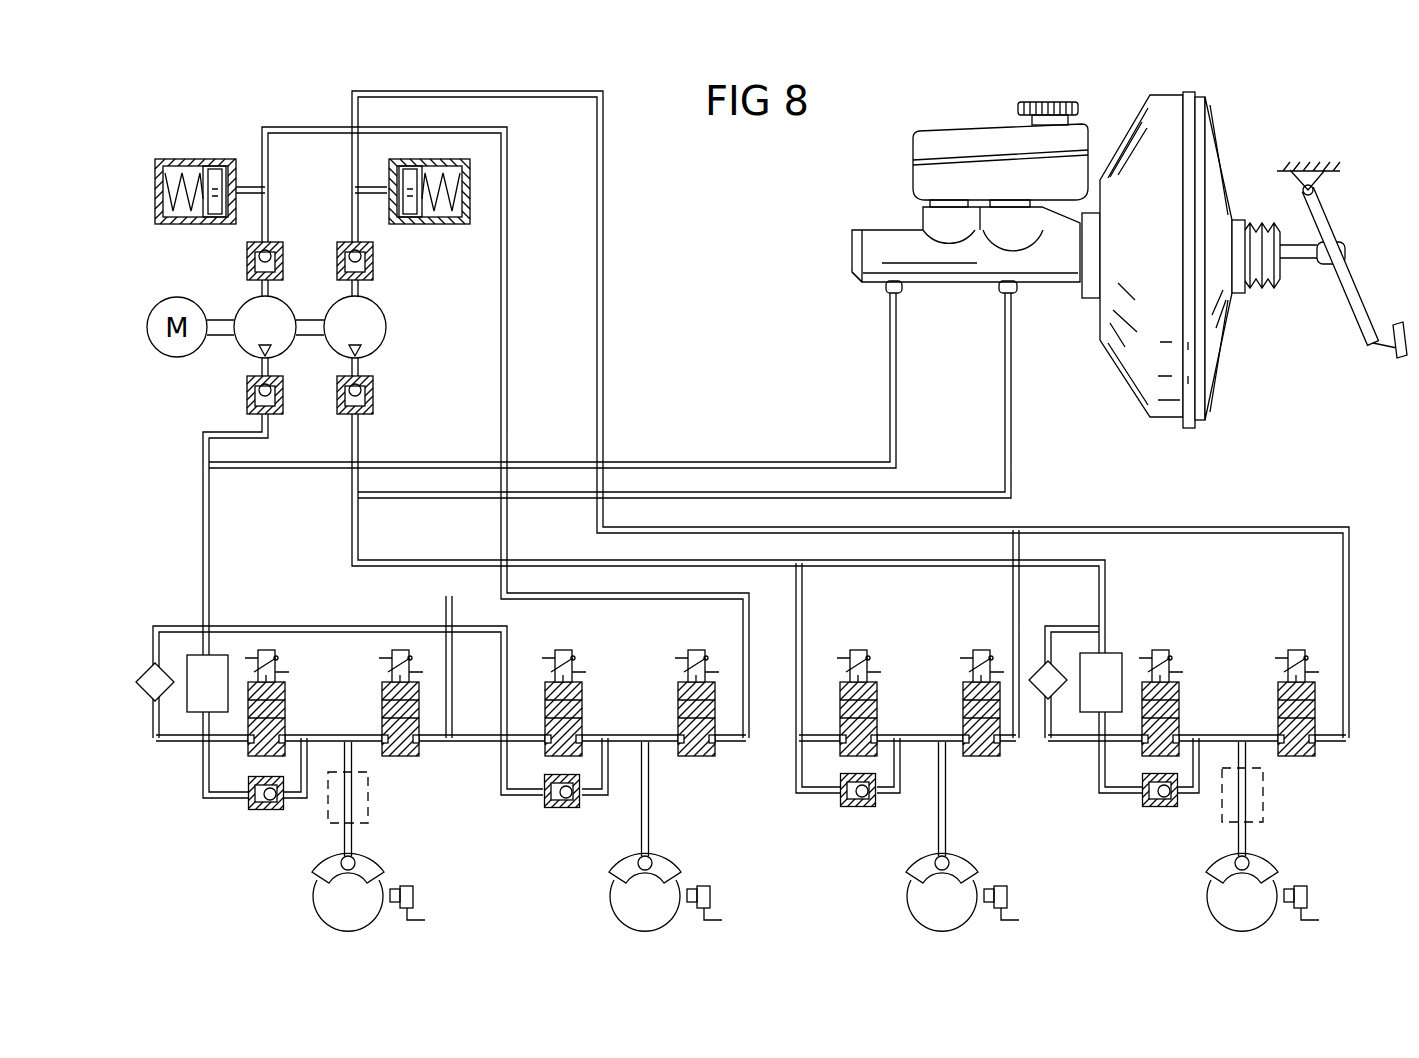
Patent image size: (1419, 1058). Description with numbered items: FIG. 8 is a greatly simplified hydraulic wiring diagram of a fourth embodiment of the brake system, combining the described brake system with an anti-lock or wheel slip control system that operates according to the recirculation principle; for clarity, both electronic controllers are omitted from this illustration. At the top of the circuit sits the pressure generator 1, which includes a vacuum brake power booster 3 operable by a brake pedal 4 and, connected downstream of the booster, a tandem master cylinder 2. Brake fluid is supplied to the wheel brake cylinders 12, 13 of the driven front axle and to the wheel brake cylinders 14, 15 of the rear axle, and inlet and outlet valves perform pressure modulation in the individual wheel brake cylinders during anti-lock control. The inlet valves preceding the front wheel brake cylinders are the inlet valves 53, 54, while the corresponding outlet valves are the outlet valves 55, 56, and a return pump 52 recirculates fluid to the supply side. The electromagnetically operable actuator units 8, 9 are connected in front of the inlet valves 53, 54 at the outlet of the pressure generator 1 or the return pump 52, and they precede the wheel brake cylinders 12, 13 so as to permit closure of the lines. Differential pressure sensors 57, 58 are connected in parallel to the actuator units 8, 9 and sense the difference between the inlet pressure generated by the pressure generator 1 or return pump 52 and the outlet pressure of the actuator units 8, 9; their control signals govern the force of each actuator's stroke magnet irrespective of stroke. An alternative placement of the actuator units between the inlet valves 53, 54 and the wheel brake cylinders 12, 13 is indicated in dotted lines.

The pressure generator 1 is at (1121, 254).
The tandem master cylinder 2 is at (880, 240).
The vacuum brake power booster 3 is at (1212, 347).
The brake pedal 4 is at (1360, 300).
The actuator unit 8 is at (200, 670).
The actuator unit 9 is at (1108, 665).
The wheel brake cylinder 12 is at (355, 860).
The wheel brake cylinder 13 is at (1250, 860).
The wheel brake cylinder 14 is at (652, 860).
The wheel brake cylinder 15 is at (950, 860).
The return pump 52 is at (340, 292).
The inlet valve 53 is at (282, 708).
The inlet valve 54 is at (1175, 692).
The outlet valve 55 is at (385, 708).
The outlet valve 56 is at (1280, 707).
The differential pressure sensor 57 is at (150, 697).
The differential pressure sensor 58 is at (1044, 694).